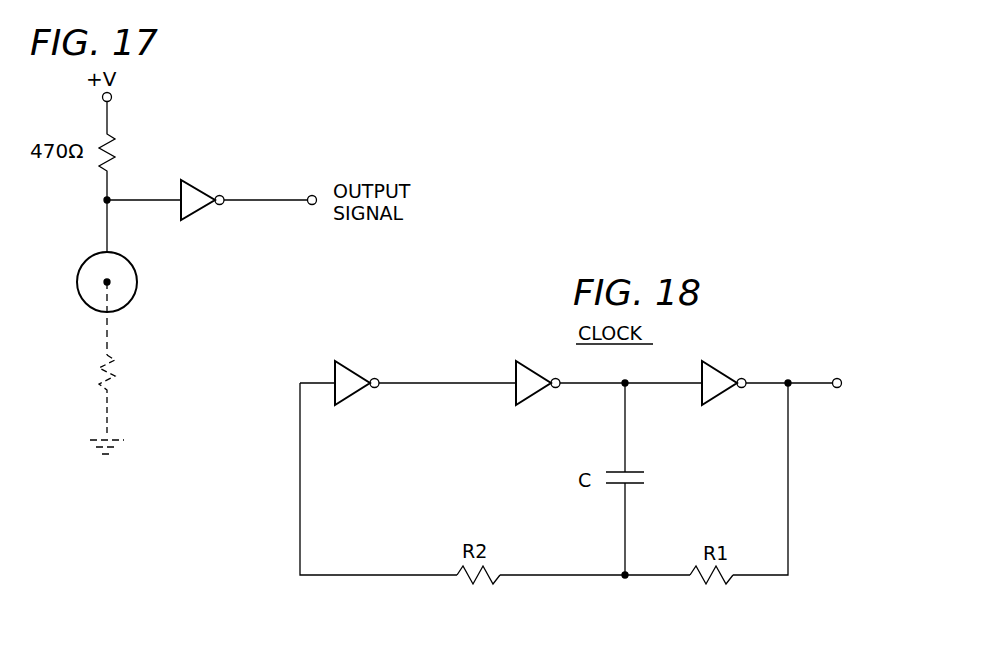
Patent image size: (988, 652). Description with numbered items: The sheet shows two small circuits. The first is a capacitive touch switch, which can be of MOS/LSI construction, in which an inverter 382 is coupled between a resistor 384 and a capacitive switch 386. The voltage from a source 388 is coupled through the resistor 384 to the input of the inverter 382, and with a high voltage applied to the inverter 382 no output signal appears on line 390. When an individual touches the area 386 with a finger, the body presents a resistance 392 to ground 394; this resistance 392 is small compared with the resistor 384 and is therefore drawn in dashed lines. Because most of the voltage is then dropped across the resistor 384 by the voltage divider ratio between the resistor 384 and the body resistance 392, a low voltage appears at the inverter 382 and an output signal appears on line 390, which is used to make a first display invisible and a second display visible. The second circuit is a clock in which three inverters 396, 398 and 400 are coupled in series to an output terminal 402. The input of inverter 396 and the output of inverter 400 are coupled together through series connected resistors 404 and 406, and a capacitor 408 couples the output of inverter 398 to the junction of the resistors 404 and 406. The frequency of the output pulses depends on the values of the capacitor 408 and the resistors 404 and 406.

In FIG. 17, the inverter 382 is at (198, 196).
In FIG. 17, the resistor 384 is at (117, 147).
In FIG. 17, the capacitive switch 386 is at (80, 272).
In FIG. 17, the voltage source 388 is at (112, 95).
In FIG. 17, the output line 390 is at (265, 200).
In FIG. 17, the body resistance 392 is at (100, 360).
In FIG. 17, the ground 394 is at (100, 442).
In FIG. 18, the first inverter 396 is at (358, 392).
In FIG. 18, the second inverter 398 is at (540, 392).
In FIG. 18, the third inverter 400 is at (726, 393).
In FIG. 18, the output terminal 402 is at (837, 378).
In FIG. 18, the resistor 404 is at (492, 581).
In FIG. 18, the resistor 406 is at (722, 582).
In FIG. 18, the capacitor 408 is at (612, 488).